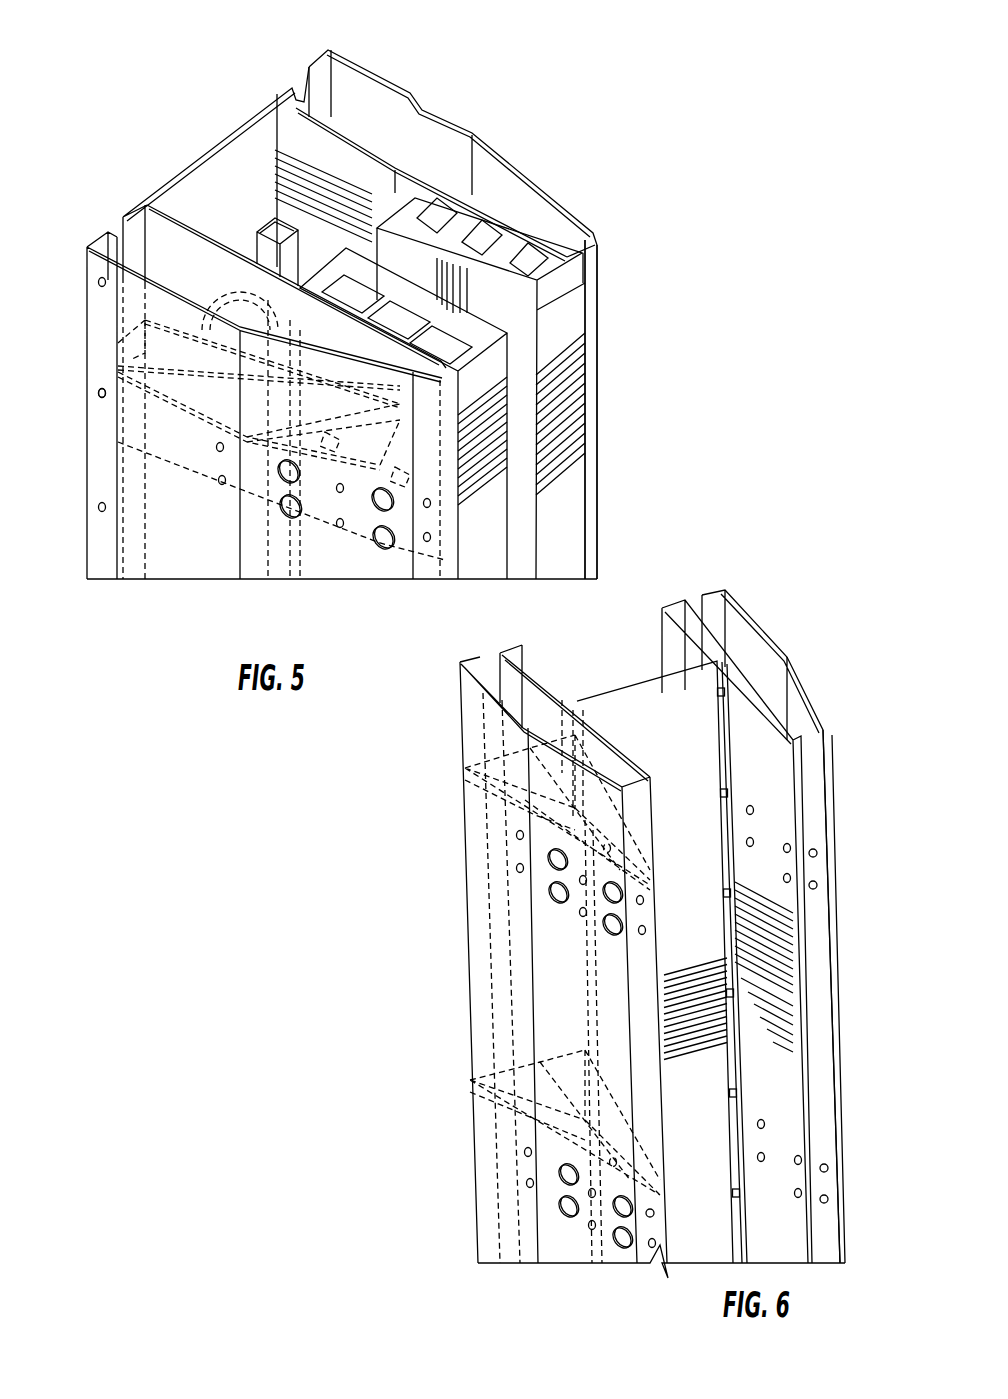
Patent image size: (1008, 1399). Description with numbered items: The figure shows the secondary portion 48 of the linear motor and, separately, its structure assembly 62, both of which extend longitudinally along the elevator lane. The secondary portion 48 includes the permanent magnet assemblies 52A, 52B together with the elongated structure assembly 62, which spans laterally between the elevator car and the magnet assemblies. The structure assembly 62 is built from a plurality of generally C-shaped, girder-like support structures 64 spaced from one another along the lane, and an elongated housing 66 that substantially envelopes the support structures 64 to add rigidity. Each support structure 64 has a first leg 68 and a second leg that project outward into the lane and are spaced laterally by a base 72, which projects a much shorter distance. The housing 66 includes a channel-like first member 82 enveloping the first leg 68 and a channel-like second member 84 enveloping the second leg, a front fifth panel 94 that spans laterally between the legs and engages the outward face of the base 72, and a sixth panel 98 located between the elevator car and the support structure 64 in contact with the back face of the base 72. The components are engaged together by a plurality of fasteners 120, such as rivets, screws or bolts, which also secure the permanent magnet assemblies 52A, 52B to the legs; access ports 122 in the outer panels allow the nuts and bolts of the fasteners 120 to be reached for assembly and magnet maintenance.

In FIG. 5, the secondary portion 48 is at (540, 73).
In FIG. 5, the structure assembly 62 is at (523, 143).
In FIG. 6, the structure assembly 62 is at (797, 568).
In FIG. 5, the housing 66 is at (540, 180).
In FIG. 6, the housing 66 is at (783, 633).
In FIG. 5, the second member 84 is at (598, 265).
In FIG. 6, the second member 84 is at (817, 802).
In FIG. 5, the permanent magnet assembly 52A is at (487, 497).
In FIG. 5, the permanent magnet assembly 52B is at (567, 368).
In FIG. 5, the fasteners 120 is at (100, 393).
In FIG. 6, the fasteners 120 is at (725, 893).
In FIG. 5, the support structure 64 is at (193, 483).
In FIG. 5, the first leg 68 is at (225, 500).
In FIG. 6, the first leg 68 is at (492, 830).
In FIG. 5, the access ports 122 is at (383, 545).
In FIG. 5, the base 72 is at (255, 247).
In FIG. 6, the base 72 is at (562, 700).
In FIG. 5, the sixth panel 98 is at (227, 136).
In FIG. 6, the fifth panel 94 is at (637, 713).
In FIG. 6, the first member 82 is at (470, 1022).